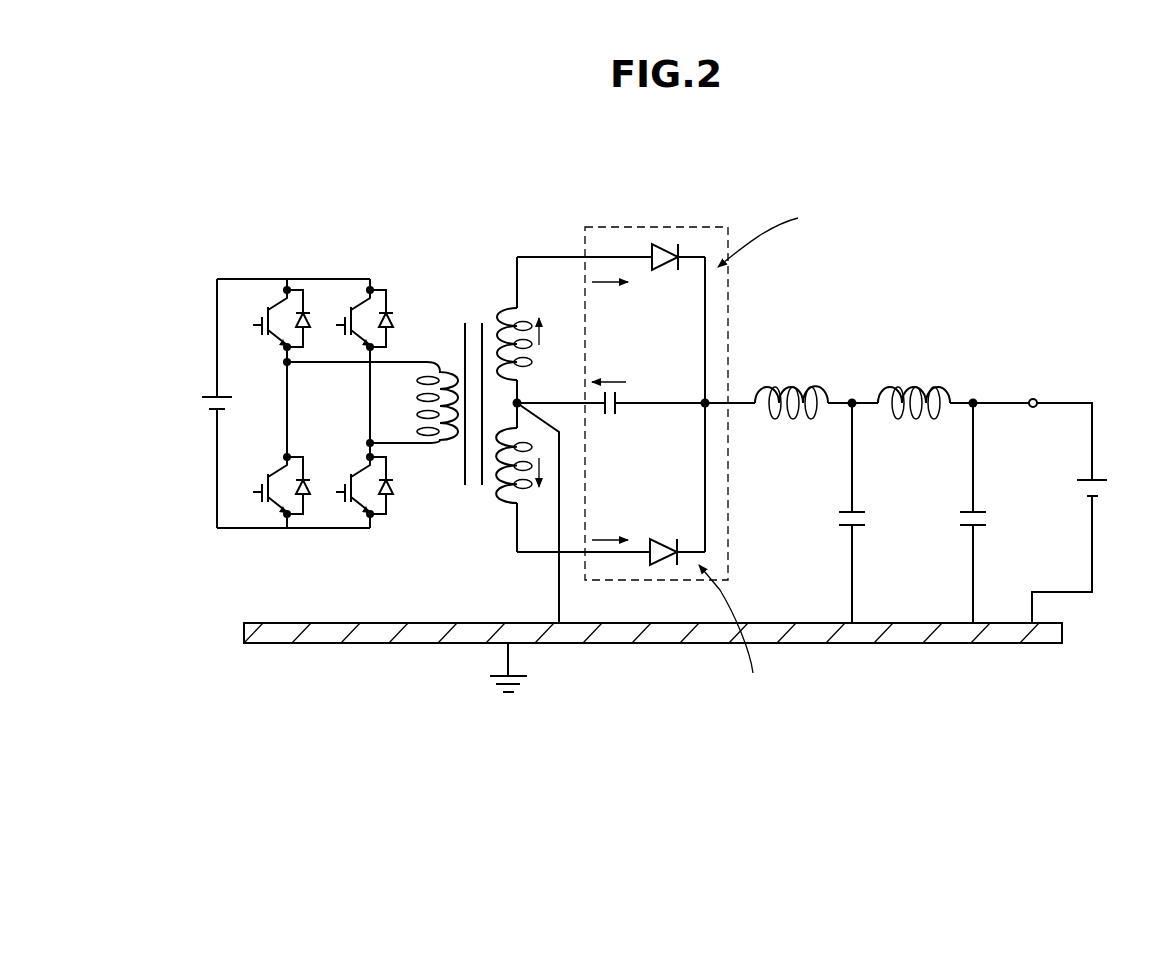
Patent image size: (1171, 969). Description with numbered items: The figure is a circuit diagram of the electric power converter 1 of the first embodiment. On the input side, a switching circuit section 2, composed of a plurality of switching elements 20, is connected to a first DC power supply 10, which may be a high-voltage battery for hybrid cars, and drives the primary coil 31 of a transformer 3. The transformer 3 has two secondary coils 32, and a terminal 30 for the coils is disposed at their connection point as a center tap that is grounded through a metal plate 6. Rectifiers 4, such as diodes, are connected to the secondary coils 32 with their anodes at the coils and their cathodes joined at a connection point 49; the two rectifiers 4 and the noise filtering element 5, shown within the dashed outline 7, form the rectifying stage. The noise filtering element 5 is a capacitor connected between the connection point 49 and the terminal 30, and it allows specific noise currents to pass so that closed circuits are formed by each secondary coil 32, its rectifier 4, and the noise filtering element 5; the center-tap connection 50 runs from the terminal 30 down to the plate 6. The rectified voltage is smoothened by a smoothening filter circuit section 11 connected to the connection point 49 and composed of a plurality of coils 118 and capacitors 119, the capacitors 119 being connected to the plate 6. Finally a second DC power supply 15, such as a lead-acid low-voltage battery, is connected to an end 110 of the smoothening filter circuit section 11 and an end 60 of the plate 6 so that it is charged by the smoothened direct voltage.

The electric power converter 1 is at (1026, 190).
The switching circuit section 2 is at (323, 354).
The transformer 3 is at (510, 440).
The rectifiers 4 is at (693, 725).
The noise filtering element 5 is at (620, 411).
The metal plate 6 is at (838, 644).
The rectifier circuit 7 is at (689, 447).
The first DC power supply 10 is at (210, 395).
The smoothening filter circuit section 11 is at (892, 497).
The second DC power supply 15 is at (1094, 479).
The switching elements 20 is at (351, 306).
The terminal for the coils 30 is at (520, 402).
The primary coil 31 is at (434, 366).
The secondary coils 32 is at (452, 710).
The connection point 49 is at (706, 402).
The ground connection line 50 is at (567, 407).
The end of the plate 60 is at (1035, 642).
The end of the smoothening filter circuit section 110 is at (1034, 399).
The coils 118 is at (910, 384).
The capacitors 119 is at (858, 527).